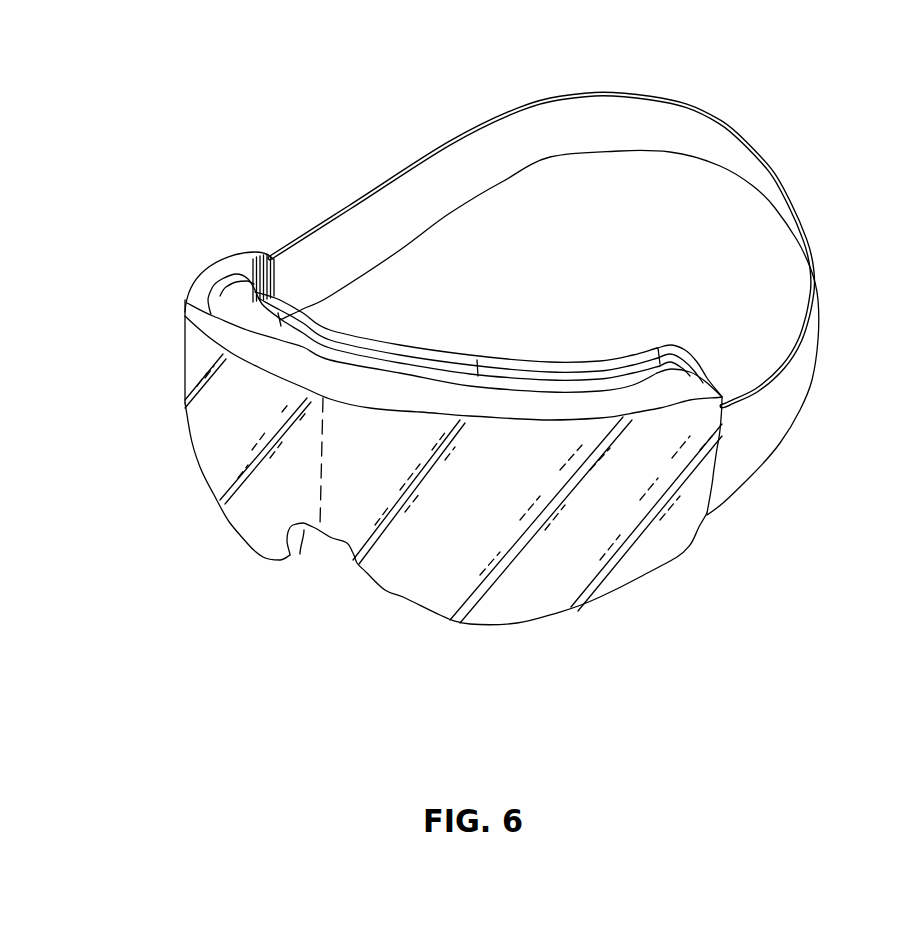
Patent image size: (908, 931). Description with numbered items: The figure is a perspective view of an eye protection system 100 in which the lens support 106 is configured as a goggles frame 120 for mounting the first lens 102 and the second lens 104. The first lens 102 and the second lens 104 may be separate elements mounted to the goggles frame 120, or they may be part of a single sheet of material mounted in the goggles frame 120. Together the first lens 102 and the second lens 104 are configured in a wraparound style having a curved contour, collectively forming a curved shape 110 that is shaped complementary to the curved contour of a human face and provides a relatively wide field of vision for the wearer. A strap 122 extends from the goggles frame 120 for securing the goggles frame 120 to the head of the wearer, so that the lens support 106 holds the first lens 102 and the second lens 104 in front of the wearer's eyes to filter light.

The eye protection system 100 is at (232, 154).
The first lens 102 is at (408, 587).
The second lens 104 is at (250, 512).
The lens support 106 is at (233, 253).
The curved shape 110 is at (351, 340).
The goggles frame 120 is at (517, 363).
The strap 122 is at (793, 198).